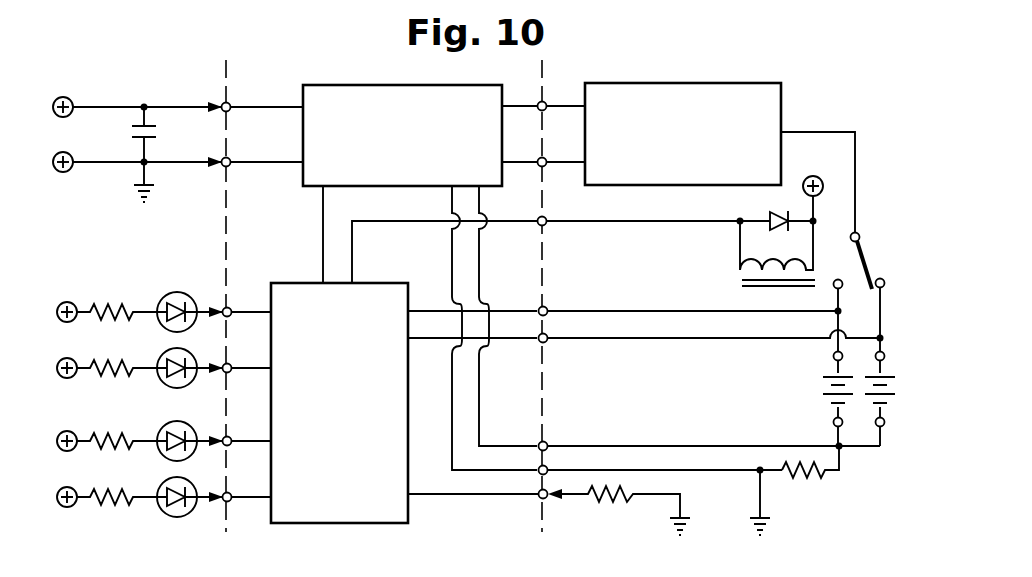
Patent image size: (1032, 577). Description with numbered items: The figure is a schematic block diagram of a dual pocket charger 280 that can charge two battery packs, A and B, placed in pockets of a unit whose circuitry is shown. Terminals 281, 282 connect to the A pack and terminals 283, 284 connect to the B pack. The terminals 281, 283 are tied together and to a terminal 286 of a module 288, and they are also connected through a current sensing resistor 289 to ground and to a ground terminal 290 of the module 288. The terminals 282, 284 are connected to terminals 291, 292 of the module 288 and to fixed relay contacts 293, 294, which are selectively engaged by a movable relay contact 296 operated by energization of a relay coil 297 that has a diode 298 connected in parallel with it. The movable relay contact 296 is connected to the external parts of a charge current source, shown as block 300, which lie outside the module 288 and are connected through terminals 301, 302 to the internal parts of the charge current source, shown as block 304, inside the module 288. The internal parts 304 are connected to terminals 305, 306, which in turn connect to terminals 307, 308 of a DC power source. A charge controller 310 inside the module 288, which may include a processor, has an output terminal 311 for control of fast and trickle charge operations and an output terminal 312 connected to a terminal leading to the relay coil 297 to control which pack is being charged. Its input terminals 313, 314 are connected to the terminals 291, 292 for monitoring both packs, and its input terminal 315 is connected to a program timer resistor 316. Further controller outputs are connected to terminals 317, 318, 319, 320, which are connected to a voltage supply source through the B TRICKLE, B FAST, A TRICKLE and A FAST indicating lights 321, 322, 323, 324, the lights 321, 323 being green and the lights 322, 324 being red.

The dual pocket charger 280 is at (808, 85).
The terminal 281 is at (834, 422).
The terminal 282 is at (834, 357).
The terminal 283 is at (884, 423).
The terminal 284 is at (885, 357).
The terminal 286 is at (547, 441).
The module 288 is at (556, 386).
The current sensing resistor 289 is at (800, 473).
The ground terminal 290 is at (540, 467).
The terminal 291 is at (545, 305).
The terminal 292 is at (546, 343).
The fixed relay contact 293 is at (834, 286).
The fixed relay contact 294 is at (886, 282).
The movable relay contact 296 is at (869, 262).
The relay coil 297 is at (740, 262).
The diode 298 is at (768, 214).
The external parts of charge current source 300 is at (720, 83).
The terminal 301 is at (544, 101).
The terminal 302 is at (544, 167).
The internal parts of charge current source 304 is at (416, 85).
The terminal 305 is at (229, 167).
The terminal 306 is at (229, 103).
The terminal of DC power source 307 is at (64, 173).
The terminal of DC power source 308 is at (66, 97).
The charge controller 310 is at (432, 438).
The output terminal 311 is at (322, 282).
The output terminal 312 is at (353, 282).
The input terminal 313 is at (410, 311).
The input terminal 314 is at (410, 340).
The input terminal 315 is at (410, 500).
The program timer resistor 316 is at (606, 498).
The terminal 317 is at (230, 492).
The terminal 318 is at (230, 436).
The terminal 319 is at (230, 363).
The terminal 320 is at (230, 307).
The indicating light 321 is at (165, 483).
The indicating light 322 is at (165, 427).
The indicating light 323 is at (165, 354).
The indicating light 324 is at (162, 297).